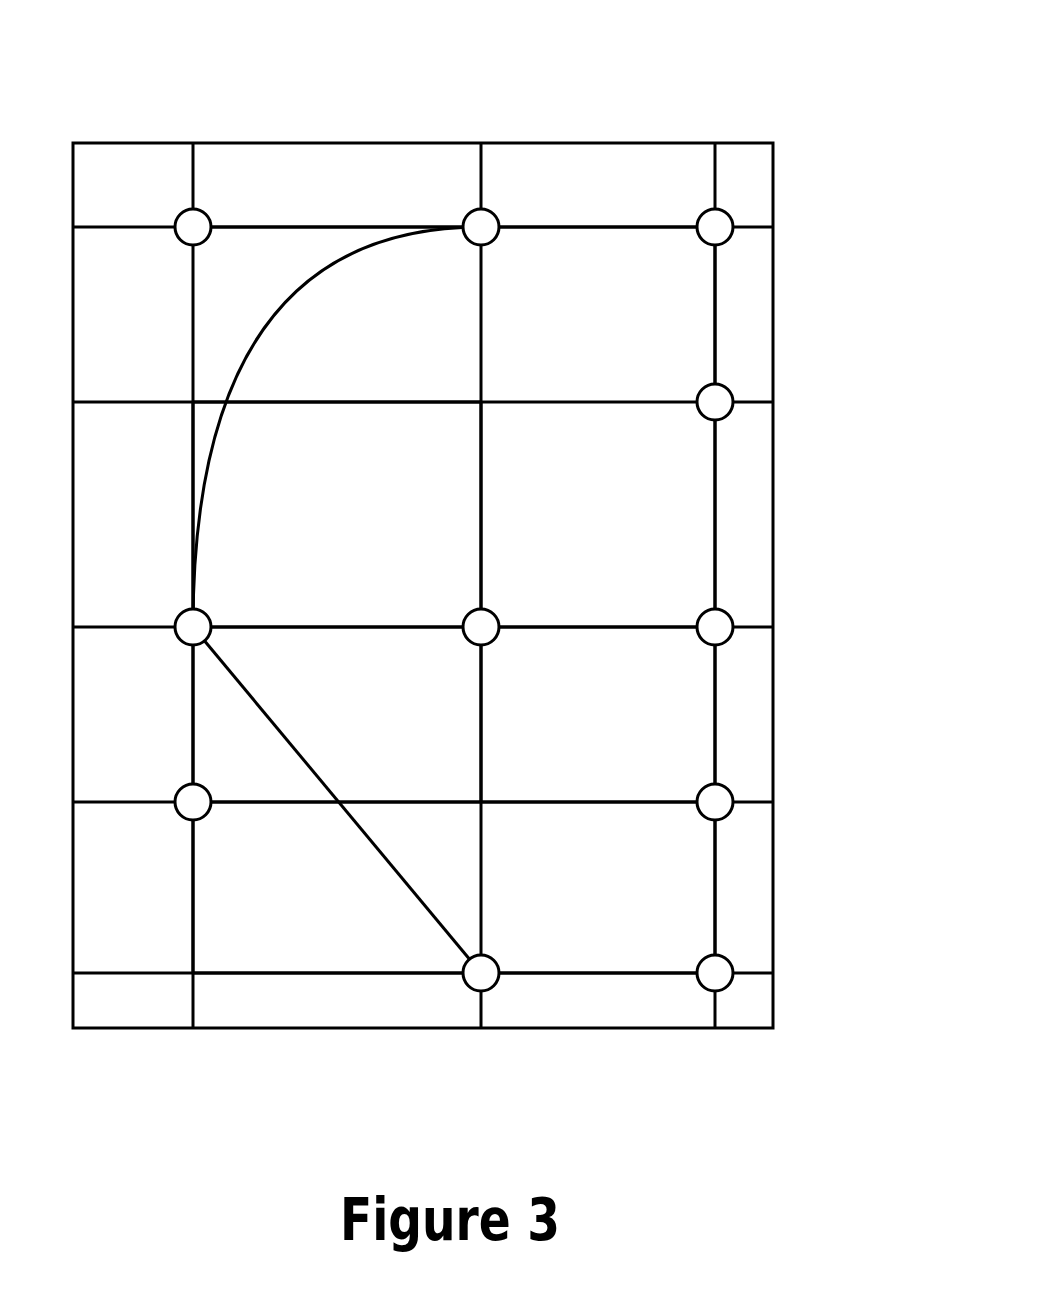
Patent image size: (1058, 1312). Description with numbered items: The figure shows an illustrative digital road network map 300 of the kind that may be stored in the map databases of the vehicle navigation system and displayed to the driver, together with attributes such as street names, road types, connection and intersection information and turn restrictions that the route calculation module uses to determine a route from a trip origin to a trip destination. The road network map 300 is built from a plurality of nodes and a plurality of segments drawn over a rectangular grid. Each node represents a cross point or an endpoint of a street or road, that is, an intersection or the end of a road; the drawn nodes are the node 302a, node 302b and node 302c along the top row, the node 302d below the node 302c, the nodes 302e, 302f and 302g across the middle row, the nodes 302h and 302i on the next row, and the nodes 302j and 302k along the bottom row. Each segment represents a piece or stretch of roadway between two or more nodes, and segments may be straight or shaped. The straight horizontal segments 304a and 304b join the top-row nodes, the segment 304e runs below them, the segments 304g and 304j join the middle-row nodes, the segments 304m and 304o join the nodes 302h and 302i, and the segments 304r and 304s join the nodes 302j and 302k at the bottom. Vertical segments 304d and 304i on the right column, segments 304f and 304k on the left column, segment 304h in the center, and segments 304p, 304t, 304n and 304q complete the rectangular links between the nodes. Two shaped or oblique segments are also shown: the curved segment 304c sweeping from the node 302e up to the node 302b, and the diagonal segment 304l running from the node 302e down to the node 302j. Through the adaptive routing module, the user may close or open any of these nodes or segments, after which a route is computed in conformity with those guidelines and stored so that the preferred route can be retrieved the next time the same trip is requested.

The digital road network map 300 is at (422, 142).
The node 302a is at (212, 210).
The node 302b is at (495, 212).
The node 302c is at (730, 213).
The segment 304a is at (355, 195).
The segment 304b is at (598, 230).
The segment 304d is at (718, 305).
The node 302d is at (732, 387).
The segment 304c is at (268, 333).
The segment 304e is at (345, 400).
The segment 304f is at (192, 507).
The segment 304h is at (485, 492).
The segment 304i is at (718, 520).
The node 302e is at (210, 613).
The node 302f is at (498, 615).
The segment 304g is at (328, 627).
The segment 304j is at (598, 627).
The node 302g is at (733, 610).
The segment 304p is at (718, 720).
The segment 304k is at (188, 720).
The segment 304l is at (298, 755).
The segment 304m is at (408, 763).
The segment 304n is at (482, 778).
The segment 304o is at (587, 802).
The node 302i is at (733, 788).
The segment 304t is at (720, 897).
The segment 304q is at (188, 913).
The node 302h is at (207, 817).
The segment 304r is at (348, 972).
The node 302j is at (495, 960).
The segment 304s is at (613, 973).
The node 302k is at (728, 958).